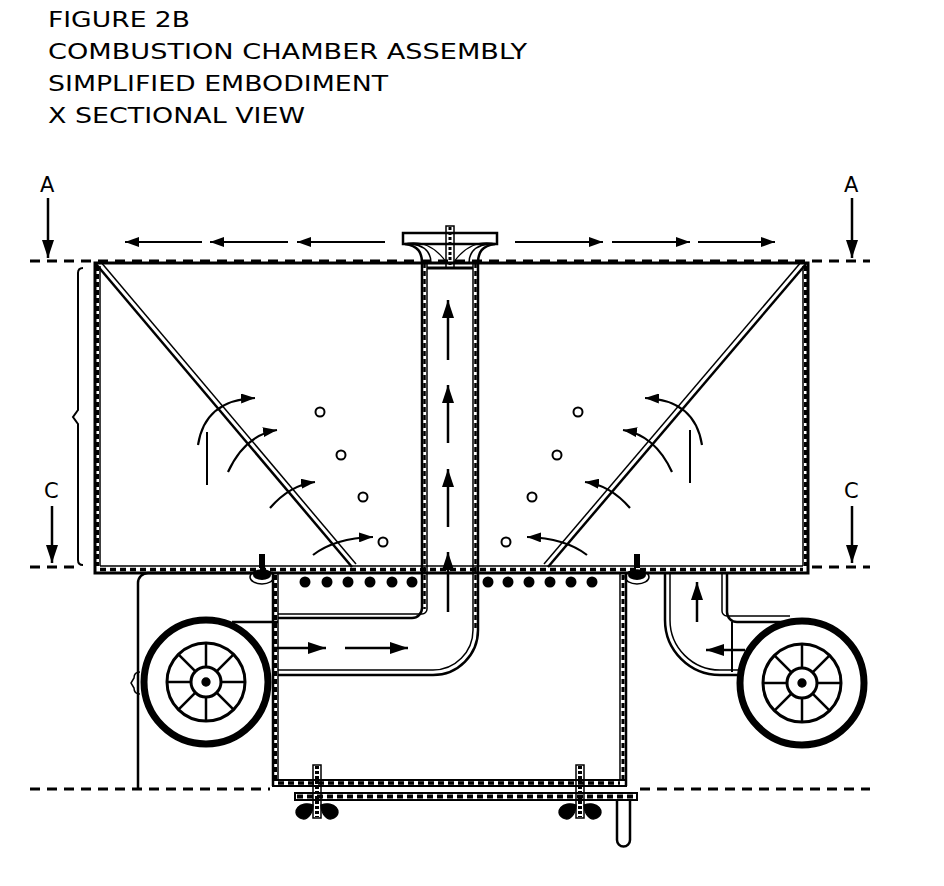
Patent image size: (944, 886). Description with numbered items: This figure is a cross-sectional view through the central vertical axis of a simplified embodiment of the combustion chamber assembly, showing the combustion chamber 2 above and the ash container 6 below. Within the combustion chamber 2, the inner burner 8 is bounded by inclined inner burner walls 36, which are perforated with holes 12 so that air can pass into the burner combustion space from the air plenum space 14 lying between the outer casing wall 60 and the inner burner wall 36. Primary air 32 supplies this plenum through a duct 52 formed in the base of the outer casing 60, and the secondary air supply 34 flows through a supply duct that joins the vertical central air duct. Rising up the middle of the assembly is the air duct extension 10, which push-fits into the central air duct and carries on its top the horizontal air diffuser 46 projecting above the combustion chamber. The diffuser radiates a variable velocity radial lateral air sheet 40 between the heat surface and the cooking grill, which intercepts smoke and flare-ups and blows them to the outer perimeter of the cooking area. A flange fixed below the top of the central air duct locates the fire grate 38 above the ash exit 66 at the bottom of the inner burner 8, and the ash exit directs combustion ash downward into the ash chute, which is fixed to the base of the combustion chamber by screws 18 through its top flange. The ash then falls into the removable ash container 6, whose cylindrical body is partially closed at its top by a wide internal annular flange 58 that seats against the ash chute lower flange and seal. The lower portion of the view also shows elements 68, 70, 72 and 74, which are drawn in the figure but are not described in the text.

The combustion chamber 2 is at (66, 416).
The ash container 6 is at (191, 681).
The inner burner 8 is at (449, 446).
The air duct extension 10 is at (421, 386).
The holes 12 is at (283, 506).
The air plenum space 14 is at (451, 418).
The screws 18 is at (252, 578).
The primary air 32 is at (802, 696).
The secondary air supply 34 is at (206, 695).
The inner burner walls 36 is at (741, 327).
The fire grate 38 is at (533, 592).
The lateral air sheet 40 is at (228, 229).
The horizontal air diffuser 46 is at (477, 232).
The duct 52 is at (721, 630).
The internal annular flange 58 is at (608, 578).
The outer casing wall 60 is at (102, 420).
The ash exit 66 is at (396, 566).
The bottom plate 68 is at (450, 781).
The base plate 70 is at (492, 798).
The wing nuts 72 is at (555, 818).
The drain tube 74 is at (632, 818).